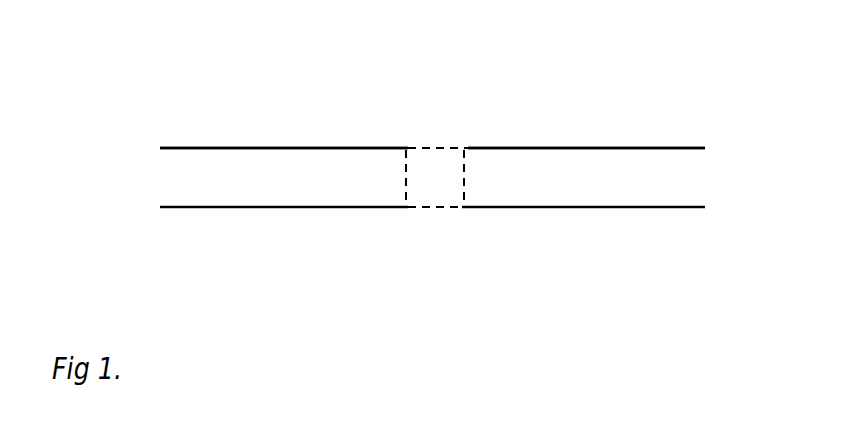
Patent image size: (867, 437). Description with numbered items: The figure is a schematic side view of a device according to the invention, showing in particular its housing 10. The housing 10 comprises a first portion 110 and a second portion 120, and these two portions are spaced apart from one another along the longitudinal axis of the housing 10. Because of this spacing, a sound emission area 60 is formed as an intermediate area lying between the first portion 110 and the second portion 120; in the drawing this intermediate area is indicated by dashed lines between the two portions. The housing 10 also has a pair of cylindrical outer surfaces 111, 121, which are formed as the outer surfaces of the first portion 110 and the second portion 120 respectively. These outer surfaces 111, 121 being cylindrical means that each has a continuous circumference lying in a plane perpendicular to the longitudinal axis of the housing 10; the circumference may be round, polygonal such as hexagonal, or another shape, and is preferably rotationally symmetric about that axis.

The housing 10 is at (280, 80).
The sound emission area 60 is at (443, 175).
The first portion 110 is at (302, 175).
The cylindrical outer surface 111 is at (343, 147).
The second portion 120 is at (595, 178).
The cylindrical outer surface 121 is at (545, 147).